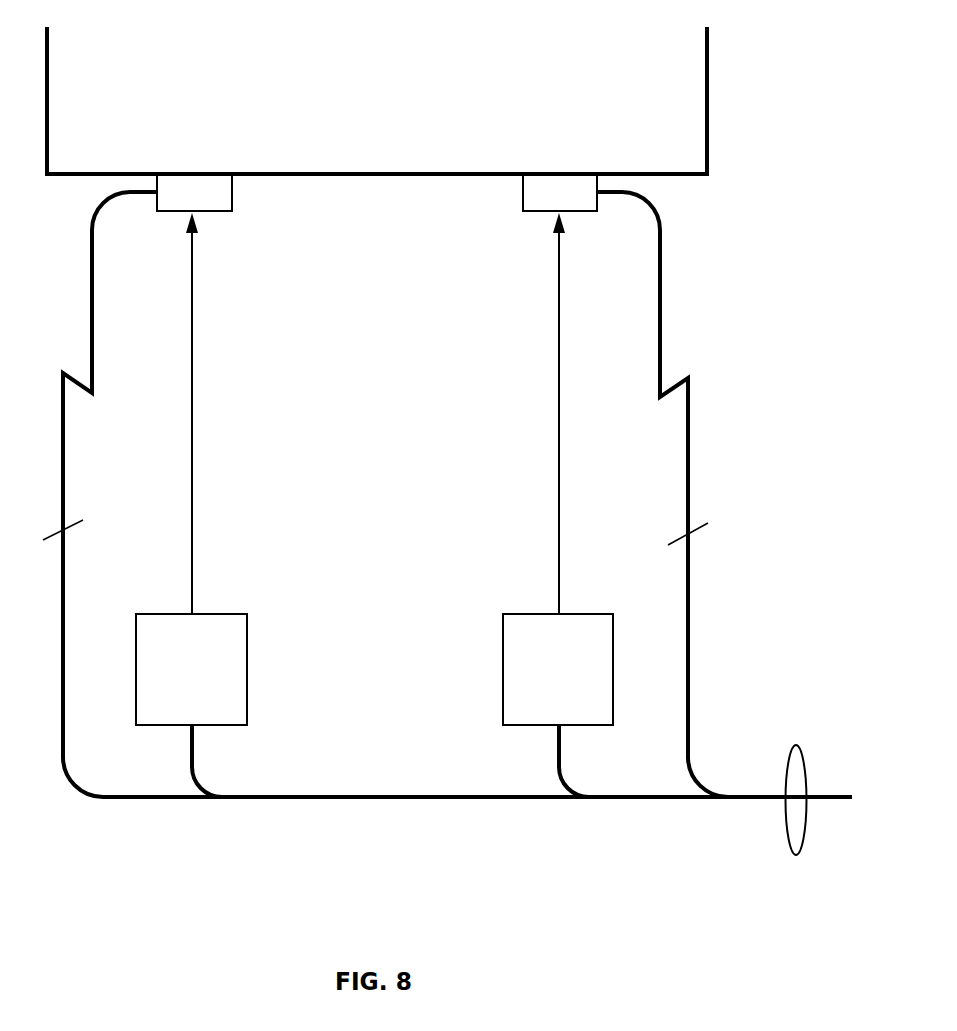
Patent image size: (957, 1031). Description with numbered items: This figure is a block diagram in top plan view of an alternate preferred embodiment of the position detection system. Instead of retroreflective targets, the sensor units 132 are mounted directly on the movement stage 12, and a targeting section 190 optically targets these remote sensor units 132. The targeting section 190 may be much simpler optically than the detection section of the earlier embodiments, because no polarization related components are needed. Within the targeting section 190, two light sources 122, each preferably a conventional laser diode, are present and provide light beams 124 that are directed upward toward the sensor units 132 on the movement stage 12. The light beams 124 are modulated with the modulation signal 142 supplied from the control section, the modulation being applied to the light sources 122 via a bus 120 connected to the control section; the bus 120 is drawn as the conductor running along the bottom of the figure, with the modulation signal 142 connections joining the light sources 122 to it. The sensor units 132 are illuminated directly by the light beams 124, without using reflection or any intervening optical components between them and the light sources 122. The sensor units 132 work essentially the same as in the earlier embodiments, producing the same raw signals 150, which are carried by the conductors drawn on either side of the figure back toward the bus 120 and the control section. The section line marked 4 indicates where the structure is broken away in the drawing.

The movement stage 12 is at (107, 132).
The raw signals 150 is at (63, 600).
The section line 4 is at (384, 528).
The sensor unit 132 is at (232, 192).
The light beam 124 is at (192, 448).
The light source 122 is at (172, 684).
The modulation signal 142 is at (194, 765).
The bus 120 is at (796, 855).
The targeting section 190 is at (770, 283).